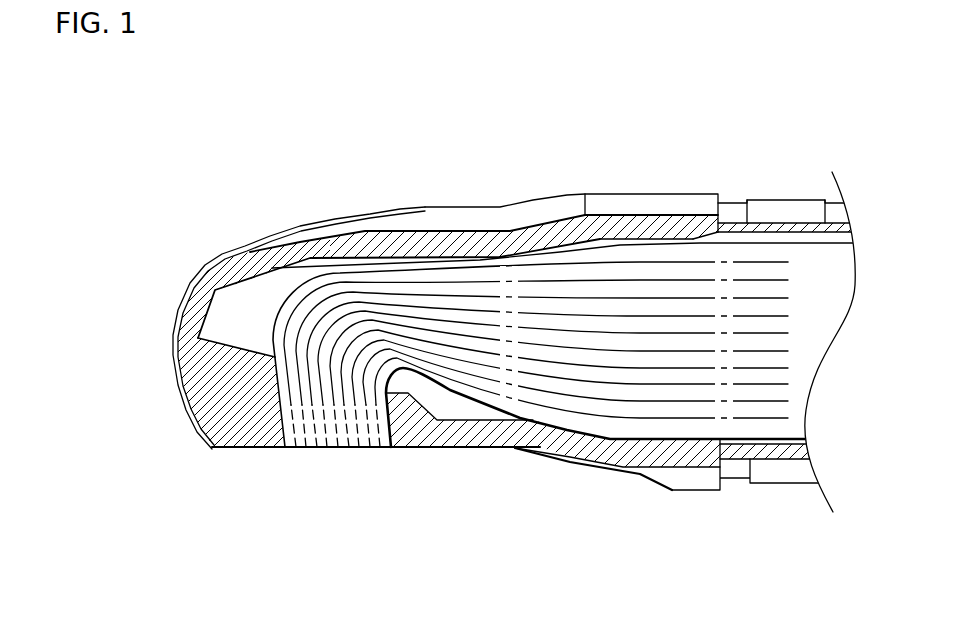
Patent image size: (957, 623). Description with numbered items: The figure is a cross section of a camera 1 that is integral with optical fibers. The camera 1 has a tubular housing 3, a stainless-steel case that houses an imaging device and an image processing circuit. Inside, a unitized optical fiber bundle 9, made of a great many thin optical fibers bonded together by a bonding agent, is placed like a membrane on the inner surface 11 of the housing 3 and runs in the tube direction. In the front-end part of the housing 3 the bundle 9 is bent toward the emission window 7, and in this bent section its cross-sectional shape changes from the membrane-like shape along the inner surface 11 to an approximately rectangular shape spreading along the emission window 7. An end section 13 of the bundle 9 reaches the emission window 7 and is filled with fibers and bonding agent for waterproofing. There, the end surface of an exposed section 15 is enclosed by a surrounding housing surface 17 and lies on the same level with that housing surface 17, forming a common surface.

The camera 1 is at (116, 115).
The housing 3 is at (174, 405).
The emission window 7 is at (305, 475).
The unitized optical fiber bundle 9 is at (573, 421).
The inner surface 11 is at (247, 303).
The end section 13 is at (341, 462).
The exposed section 15 is at (371, 450).
The housing surface 17 is at (252, 450).